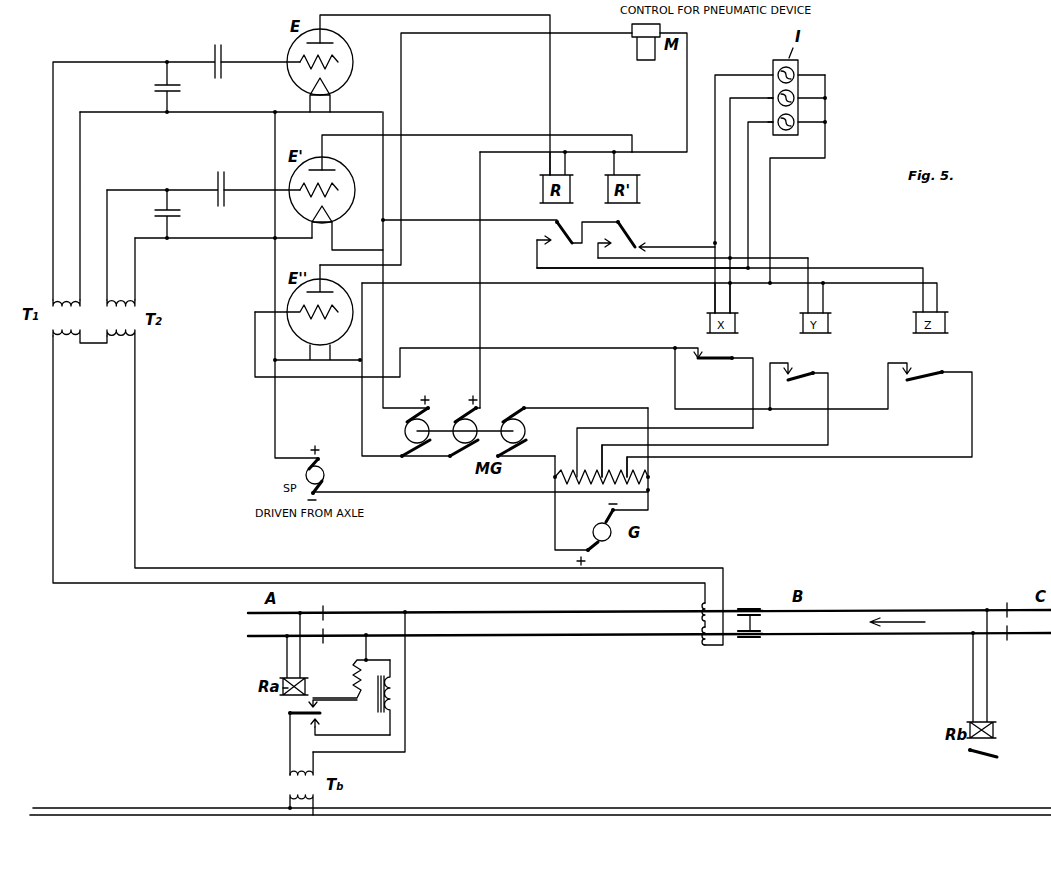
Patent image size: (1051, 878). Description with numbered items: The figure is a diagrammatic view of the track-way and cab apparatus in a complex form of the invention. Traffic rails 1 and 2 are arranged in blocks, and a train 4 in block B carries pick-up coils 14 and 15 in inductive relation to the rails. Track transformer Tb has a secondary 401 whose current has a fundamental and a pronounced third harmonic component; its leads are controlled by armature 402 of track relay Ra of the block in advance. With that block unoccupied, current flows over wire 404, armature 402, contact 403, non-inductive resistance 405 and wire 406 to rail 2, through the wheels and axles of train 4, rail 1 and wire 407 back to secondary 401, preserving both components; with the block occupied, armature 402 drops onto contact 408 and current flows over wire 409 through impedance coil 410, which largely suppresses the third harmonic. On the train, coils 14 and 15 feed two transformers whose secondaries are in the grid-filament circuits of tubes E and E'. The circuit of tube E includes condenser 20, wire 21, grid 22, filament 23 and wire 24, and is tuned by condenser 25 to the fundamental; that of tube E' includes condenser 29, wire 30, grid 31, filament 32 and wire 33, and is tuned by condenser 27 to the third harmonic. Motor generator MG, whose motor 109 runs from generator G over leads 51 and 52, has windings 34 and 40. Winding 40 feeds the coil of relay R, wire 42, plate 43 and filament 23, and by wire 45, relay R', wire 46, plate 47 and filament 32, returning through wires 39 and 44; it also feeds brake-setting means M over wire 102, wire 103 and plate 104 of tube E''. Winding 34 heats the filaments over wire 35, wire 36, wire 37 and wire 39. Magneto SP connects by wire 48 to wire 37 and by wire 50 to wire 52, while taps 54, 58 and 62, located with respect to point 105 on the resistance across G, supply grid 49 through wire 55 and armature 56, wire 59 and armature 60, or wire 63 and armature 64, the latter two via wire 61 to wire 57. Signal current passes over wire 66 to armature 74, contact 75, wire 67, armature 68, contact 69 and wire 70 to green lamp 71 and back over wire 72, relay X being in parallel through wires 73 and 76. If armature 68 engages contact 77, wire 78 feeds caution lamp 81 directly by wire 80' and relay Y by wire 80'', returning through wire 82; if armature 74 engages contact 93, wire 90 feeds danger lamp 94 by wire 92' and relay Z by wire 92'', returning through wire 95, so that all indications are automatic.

The condenser 20 is at (216, 45).
The wire 21 is at (248, 63).
The grid 22 is at (300, 62).
The filament 23 is at (311, 91).
The wire 24 is at (230, 112).
The tuning condenser 25 is at (155, 88).
The tuning condenser 27 is at (155, 213).
The condenser 29 is at (219, 172).
The wire 30 is at (250, 191).
The grid 31 is at (338, 190).
The filament 32 is at (307, 222).
The wire 33 is at (208, 238).
The generator winding 34 is at (405, 437).
The wire 35 is at (383, 319).
The wire 36 is at (275, 146).
The wire 37 is at (333, 250).
The wire 39 is at (361, 414).
The generator winding 40 is at (481, 420).
The wire 42 is at (549, 69).
The plate 43 is at (334, 44).
The wire 44 is at (420, 458).
The wire 45 is at (594, 153).
The wire 46 is at (464, 135).
The plate 47 is at (336, 170).
The wire 48 is at (275, 425).
The grid 49 is at (340, 301).
The wire 50 is at (458, 493).
The lead 51 is at (555, 519).
The lead 52 is at (650, 501).
The tap 54 is at (576, 470).
The wire 55 is at (735, 428).
The armature 56 is at (722, 360).
The wire 57 is at (600, 348).
The tap 58 is at (601, 470).
The wire 59 is at (773, 445).
The armature 60 is at (800, 380).
The wire 61 is at (750, 415).
The tap 62 is at (627, 471).
The wire 63 is at (770, 459).
The armature 64 is at (920, 381).
The wire 66 is at (440, 220).
The wire 67 is at (600, 222).
The armature 68 is at (630, 234).
The contact 69 is at (643, 246).
The wire 70 is at (715, 181).
The green or proceed signal lamp 71 is at (777, 69).
The wire 72 is at (826, 91).
The wire 73 is at (713, 300).
The armature 74 is at (548, 239).
The contact 75 is at (570, 237).
The wire 76 is at (732, 296).
The contact 77 is at (604, 242).
The wire 78 is at (662, 258).
The wire 80' is at (773, 178).
The wire 80'' is at (792, 285).
The yellow or caution lamp 81 is at (777, 97).
The wire 82 is at (800, 100).
The wire 90 is at (548, 250).
The wire 92' is at (786, 195).
The wire 92'' is at (730, 290).
The contact 93 is at (536, 253).
The danger or red light 94 is at (777, 121).
The wire 95 is at (800, 125).
The wire 102 is at (656, 152).
The wire 103 is at (571, 33).
The plate 104 is at (306, 293).
The point 105 is at (650, 477).
The motor 109 is at (526, 431).
The traffic rail 1 is at (357, 612).
The traffic rail 2 is at (490, 637).
The train 4 is at (752, 607).
The pick-up coil 14 is at (700, 607).
The pick-up coil 15 is at (700, 642).
The secondary 401 is at (305, 763).
The armature 402 is at (289, 713).
The contact 403 is at (316, 700).
The wire 404 is at (289, 750).
The non-inductive resistance 405 is at (355, 667).
The wire 406 is at (368, 652).
The wire 407 is at (406, 739).
The contact 408 is at (315, 726).
The wire 409 is at (364, 736).
The impedance coil 410 is at (376, 700).